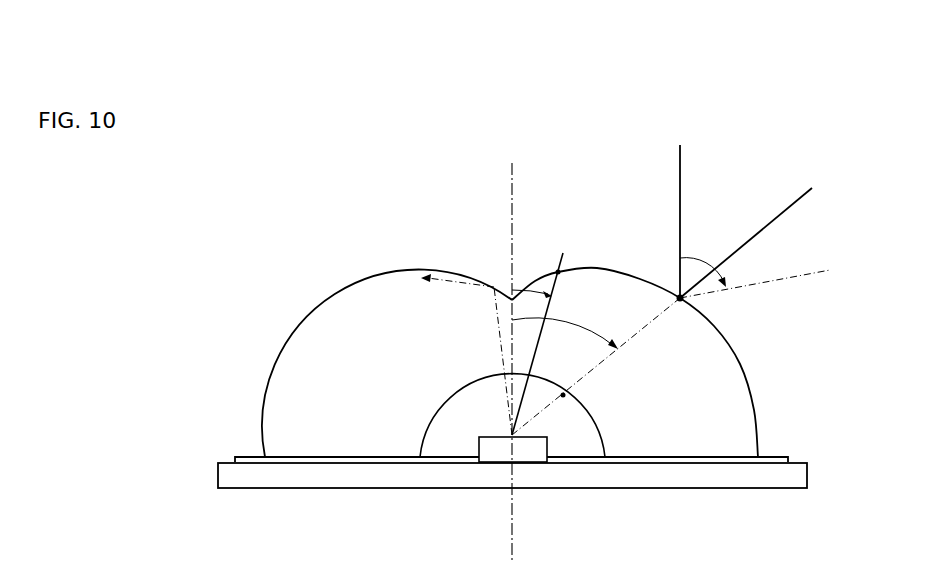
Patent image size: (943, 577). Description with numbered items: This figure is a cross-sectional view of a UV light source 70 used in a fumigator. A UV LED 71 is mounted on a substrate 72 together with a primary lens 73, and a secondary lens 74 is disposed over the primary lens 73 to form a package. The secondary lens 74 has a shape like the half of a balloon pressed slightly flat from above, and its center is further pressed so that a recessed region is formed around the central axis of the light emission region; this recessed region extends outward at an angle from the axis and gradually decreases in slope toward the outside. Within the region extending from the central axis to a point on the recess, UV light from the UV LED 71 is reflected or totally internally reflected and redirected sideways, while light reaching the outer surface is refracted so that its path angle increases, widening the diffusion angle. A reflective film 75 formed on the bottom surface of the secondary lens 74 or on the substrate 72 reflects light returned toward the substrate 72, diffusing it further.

The light emitting device 70 is at (307, 248).
The UV LED 71 is at (533, 452).
The substrate 72 is at (763, 480).
The primary lens 73 is at (450, 430).
The secondary lens 74 is at (720, 370).
The reflective film 75 is at (775, 456).